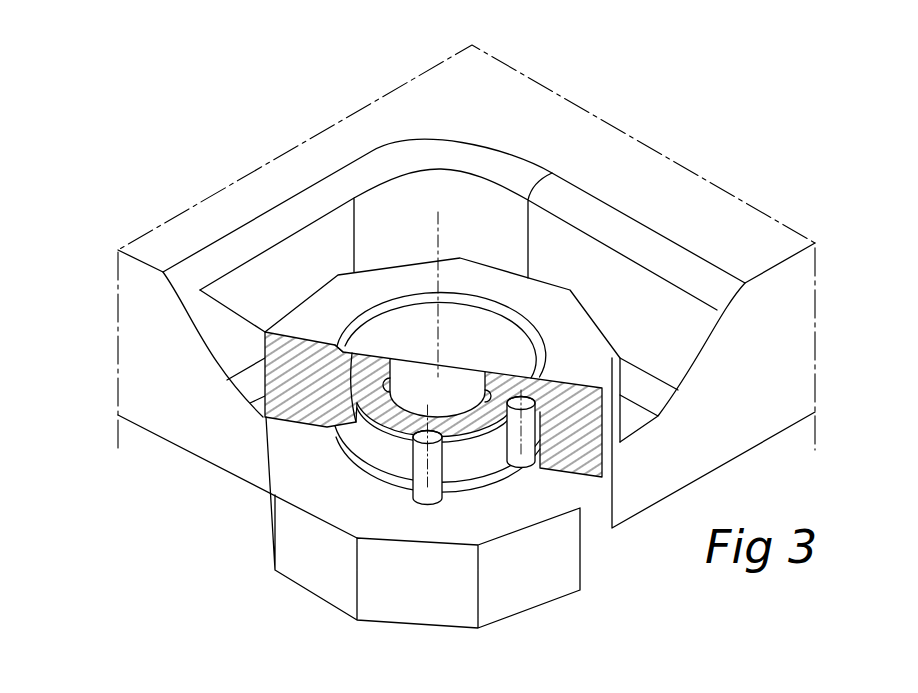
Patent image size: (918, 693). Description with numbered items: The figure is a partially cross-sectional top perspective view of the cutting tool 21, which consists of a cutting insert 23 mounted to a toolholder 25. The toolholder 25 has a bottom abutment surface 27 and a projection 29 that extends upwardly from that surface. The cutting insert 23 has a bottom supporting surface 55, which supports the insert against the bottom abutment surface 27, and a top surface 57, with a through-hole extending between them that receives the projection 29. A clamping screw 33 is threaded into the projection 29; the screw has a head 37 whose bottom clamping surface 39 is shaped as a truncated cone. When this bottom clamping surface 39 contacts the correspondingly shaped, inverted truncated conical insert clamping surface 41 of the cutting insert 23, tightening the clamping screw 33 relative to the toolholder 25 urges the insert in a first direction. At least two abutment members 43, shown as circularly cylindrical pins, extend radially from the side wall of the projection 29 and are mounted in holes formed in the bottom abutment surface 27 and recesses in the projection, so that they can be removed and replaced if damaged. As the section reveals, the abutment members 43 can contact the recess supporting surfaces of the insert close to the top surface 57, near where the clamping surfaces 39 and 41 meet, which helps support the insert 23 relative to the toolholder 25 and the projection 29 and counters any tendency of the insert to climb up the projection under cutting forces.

The cutting tool 21 is at (187, 183).
The cutting insert 23 is at (572, 335).
The toolholder 25 is at (183, 235).
The bottom abutment surface 27 is at (562, 497).
The projection 29 is at (385, 453).
The clamping screw 33 is at (430, 332).
The head 37 is at (387, 335).
The bottom clamping surface 39 is at (362, 348).
The insert clamping surface 41 is at (365, 362).
The abutment members 43 is at (433, 468).
The bottom supporting surface 55 is at (293, 424).
The top surface 57 is at (547, 307).